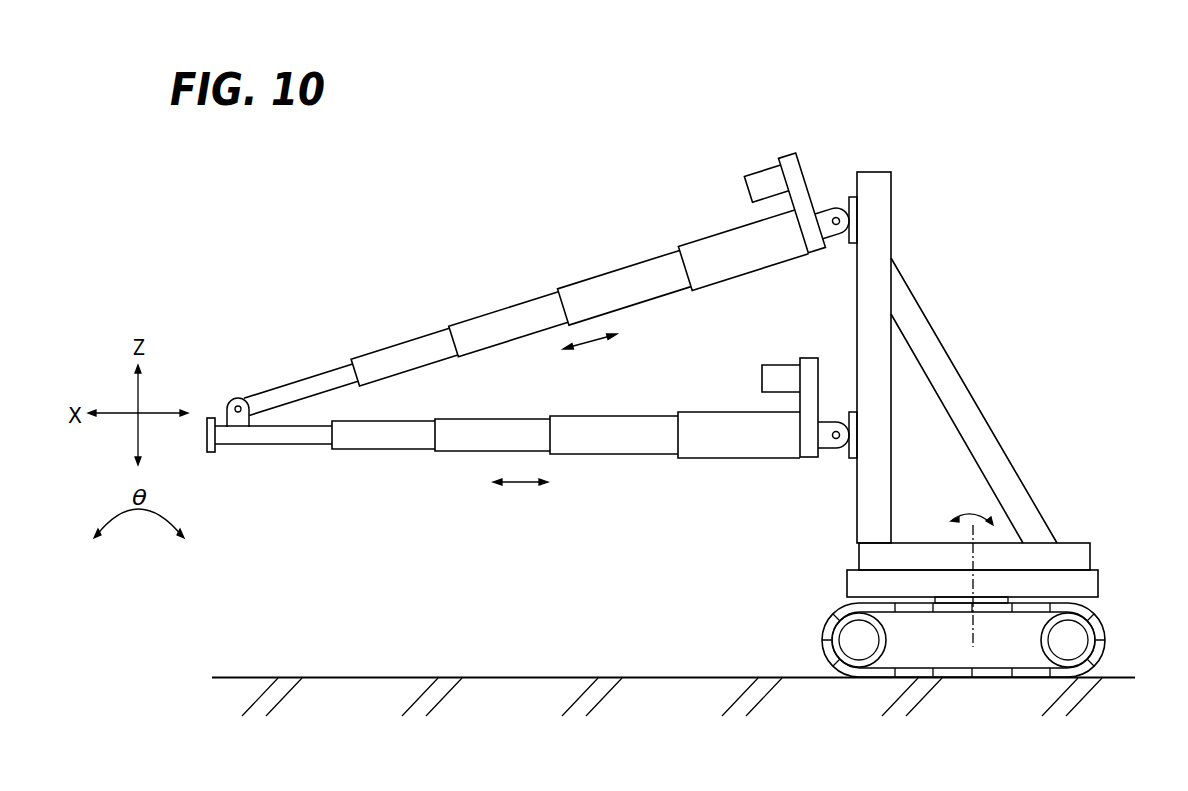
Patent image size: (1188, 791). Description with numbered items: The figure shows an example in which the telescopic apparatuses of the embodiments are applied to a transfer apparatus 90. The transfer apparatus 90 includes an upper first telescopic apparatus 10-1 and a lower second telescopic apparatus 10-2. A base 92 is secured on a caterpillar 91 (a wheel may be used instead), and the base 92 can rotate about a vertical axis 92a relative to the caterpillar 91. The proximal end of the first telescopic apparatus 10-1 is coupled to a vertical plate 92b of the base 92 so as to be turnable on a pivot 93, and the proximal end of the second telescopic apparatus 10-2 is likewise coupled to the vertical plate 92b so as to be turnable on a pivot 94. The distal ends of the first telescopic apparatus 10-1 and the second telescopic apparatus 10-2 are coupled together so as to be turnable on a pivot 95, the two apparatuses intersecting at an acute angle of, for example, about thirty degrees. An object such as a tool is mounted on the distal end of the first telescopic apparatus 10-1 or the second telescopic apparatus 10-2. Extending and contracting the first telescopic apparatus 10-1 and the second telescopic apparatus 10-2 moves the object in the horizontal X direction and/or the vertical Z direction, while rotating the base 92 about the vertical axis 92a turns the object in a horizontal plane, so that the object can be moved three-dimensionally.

The transfer apparatus 90 is at (570, 192).
The first telescopic apparatus 10-1 is at (643, 257).
The second telescopic apparatus 10-2 is at (708, 408).
The caterpillar 91 is at (957, 658).
The base 92 is at (1000, 552).
The vertical axis 92a is at (972, 580).
The vertical plate 92b is at (893, 390).
The pivot 93 is at (834, 209).
The pivot 94 is at (834, 448).
The pivot 95 is at (240, 397).